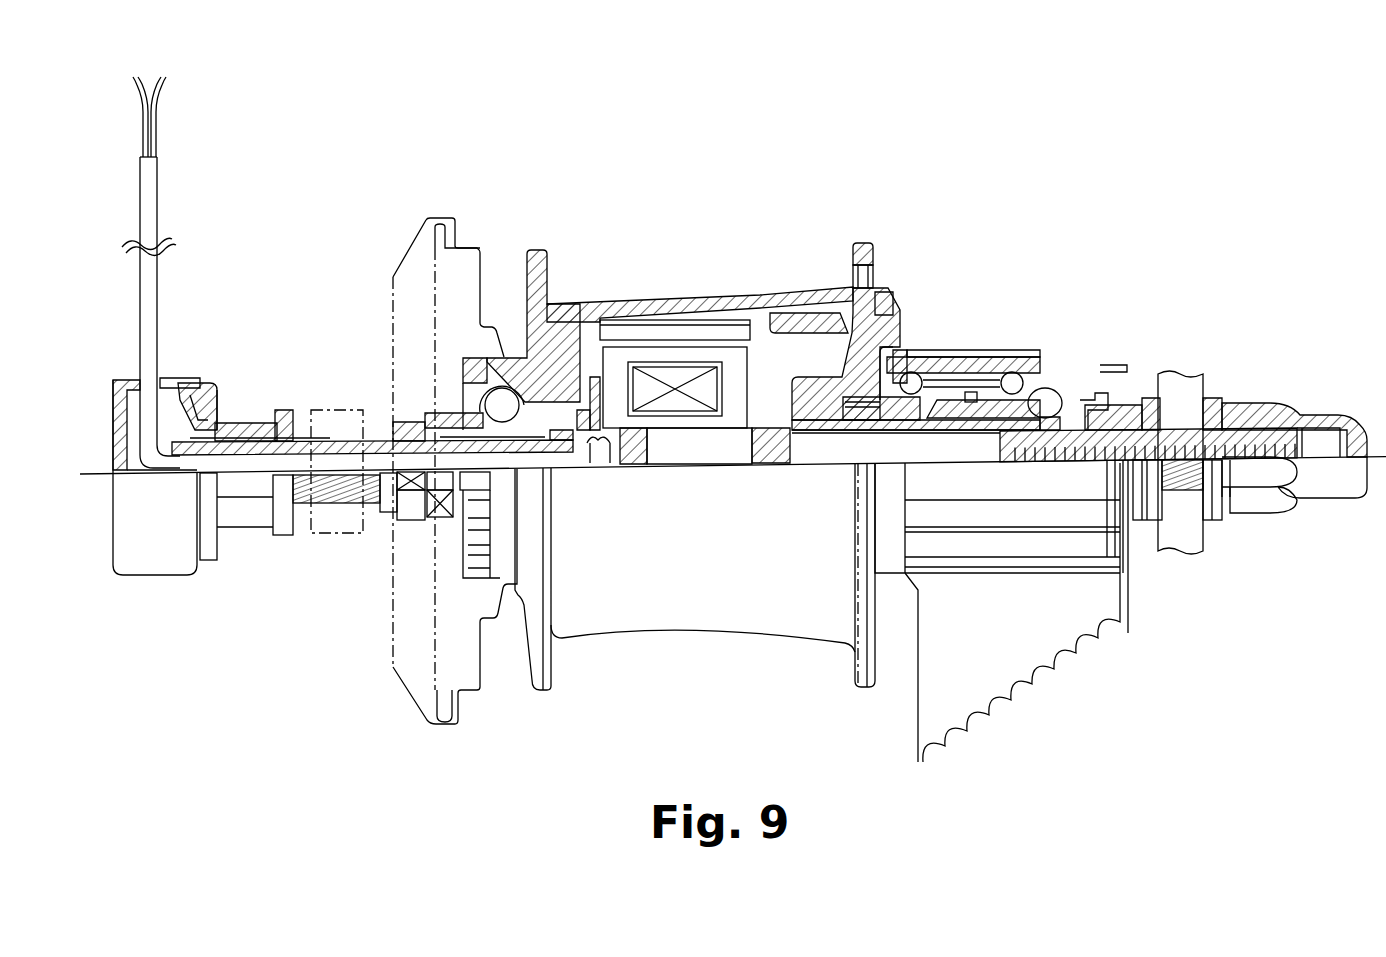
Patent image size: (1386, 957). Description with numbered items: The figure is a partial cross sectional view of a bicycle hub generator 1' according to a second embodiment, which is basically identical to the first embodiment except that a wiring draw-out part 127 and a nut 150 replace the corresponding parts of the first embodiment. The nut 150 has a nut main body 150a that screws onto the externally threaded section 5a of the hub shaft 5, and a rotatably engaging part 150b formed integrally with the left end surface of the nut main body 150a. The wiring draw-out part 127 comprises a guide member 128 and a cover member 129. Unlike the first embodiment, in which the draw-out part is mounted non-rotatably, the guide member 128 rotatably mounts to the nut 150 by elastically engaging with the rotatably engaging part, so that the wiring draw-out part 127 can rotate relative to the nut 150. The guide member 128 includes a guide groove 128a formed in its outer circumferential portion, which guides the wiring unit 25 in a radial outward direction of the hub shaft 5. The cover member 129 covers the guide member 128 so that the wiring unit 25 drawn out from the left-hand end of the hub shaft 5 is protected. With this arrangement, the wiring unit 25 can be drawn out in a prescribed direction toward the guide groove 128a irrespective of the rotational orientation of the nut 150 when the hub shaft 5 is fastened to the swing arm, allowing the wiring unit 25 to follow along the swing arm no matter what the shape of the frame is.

The bicycle hub generator 1' is at (760, 445).
The hub shaft 5 is at (328, 410).
The externally threaded section 5a is at (380, 441).
The wiring unit 25 is at (148, 223).
The wiring draw-out part 127 is at (111, 381).
The guide member 128 is at (214, 553).
The guide groove 128a is at (167, 381).
The cover member 129 is at (153, 556).
The nut 150 is at (256, 440).
The nut main body 150a is at (296, 438).
The rotatably engaging part 150b is at (206, 383).